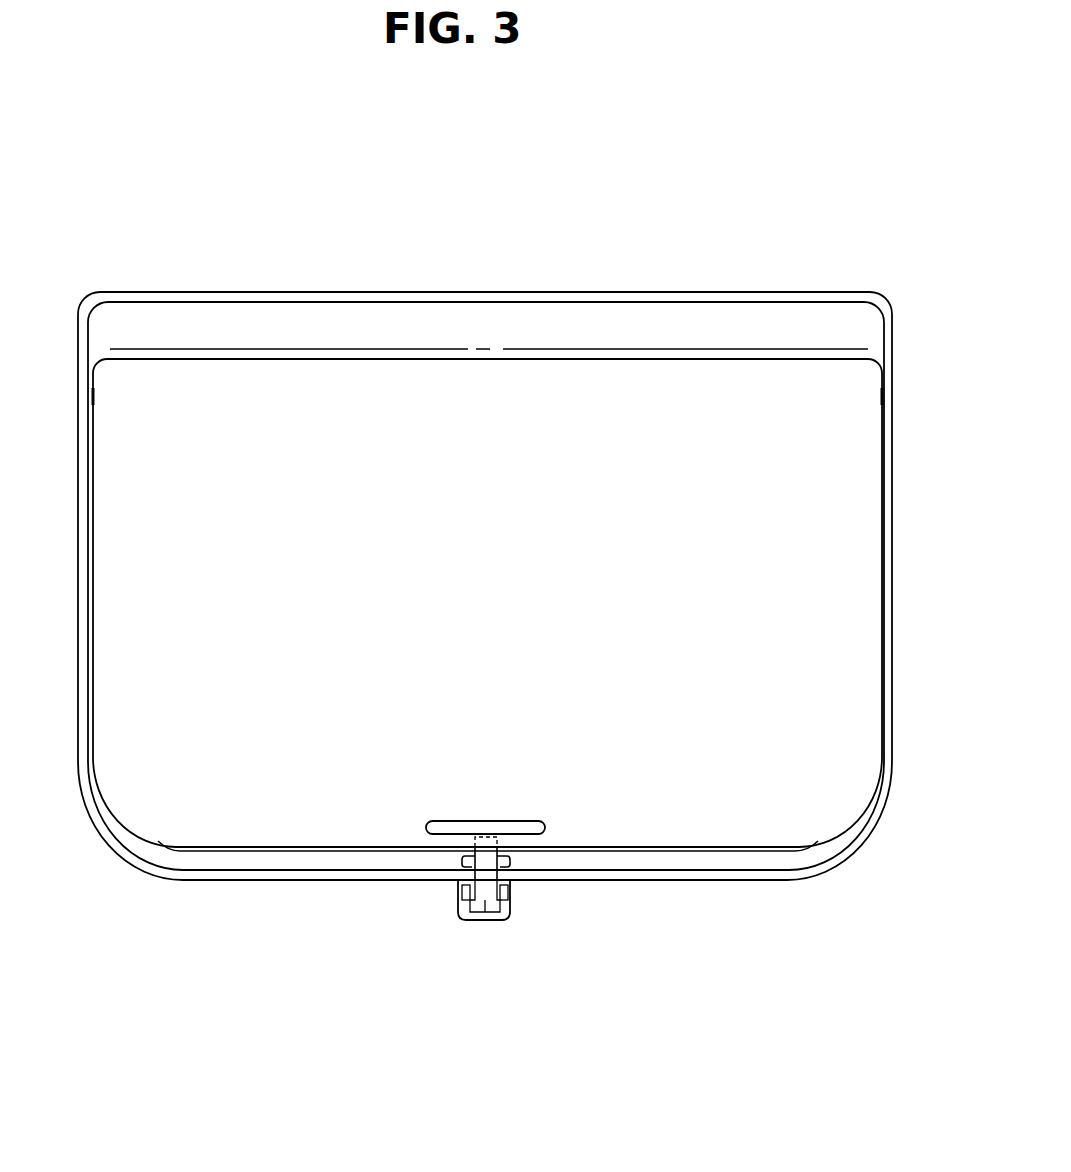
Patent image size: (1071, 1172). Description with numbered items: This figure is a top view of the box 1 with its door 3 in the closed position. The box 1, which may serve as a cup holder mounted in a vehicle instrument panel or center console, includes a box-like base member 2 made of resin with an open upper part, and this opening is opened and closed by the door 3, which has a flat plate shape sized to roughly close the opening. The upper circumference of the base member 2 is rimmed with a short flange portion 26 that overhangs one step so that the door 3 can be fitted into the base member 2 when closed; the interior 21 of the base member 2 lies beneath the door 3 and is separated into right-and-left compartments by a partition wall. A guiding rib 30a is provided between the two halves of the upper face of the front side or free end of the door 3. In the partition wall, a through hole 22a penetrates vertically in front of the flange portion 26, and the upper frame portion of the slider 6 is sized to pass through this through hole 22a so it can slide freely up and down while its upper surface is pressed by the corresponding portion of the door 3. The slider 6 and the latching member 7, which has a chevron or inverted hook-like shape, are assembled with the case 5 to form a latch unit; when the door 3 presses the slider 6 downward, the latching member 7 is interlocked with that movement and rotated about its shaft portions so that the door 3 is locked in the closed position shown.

The box 1 is at (688, 165).
The base member 2 is at (587, 292).
The door 3 is at (630, 358).
The interior 21 is at (452, 322).
The flange portion 26 is at (707, 880).
The guiding rib 30a is at (442, 820).
The through hole 22a is at (512, 857).
The slider 6 is at (462, 856).
The latching member 7 is at (473, 868).
The case 5 is at (490, 920).